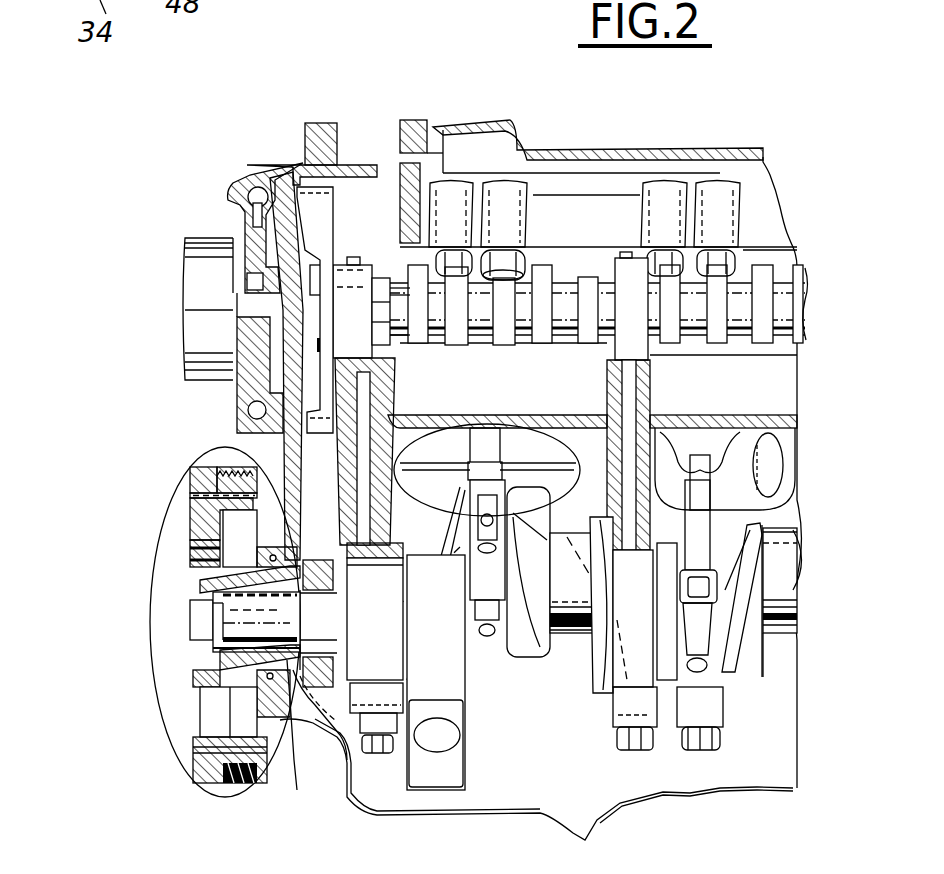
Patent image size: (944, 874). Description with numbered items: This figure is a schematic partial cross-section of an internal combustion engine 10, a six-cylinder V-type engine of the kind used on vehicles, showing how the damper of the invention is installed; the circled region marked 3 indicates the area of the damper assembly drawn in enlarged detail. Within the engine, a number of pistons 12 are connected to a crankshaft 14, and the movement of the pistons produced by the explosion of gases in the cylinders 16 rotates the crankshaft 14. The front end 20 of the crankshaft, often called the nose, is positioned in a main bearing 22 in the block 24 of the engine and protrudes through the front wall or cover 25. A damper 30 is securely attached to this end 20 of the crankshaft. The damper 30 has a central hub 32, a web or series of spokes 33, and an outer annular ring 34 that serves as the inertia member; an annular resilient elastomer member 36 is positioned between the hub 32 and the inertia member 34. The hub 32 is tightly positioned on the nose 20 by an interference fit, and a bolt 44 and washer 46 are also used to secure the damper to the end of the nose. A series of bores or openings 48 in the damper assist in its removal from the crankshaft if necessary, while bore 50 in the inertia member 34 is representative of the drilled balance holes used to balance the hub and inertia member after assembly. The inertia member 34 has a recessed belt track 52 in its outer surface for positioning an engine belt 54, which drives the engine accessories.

The internal combustion engine 10 is at (130, 397).
The detail region of FIG. 3 is at (140, 560).
The pistons 12 is at (522, 440).
The crankshaft 14 is at (460, 677).
The cylinders 16 is at (428, 440).
The end of the crankshaft (nose) 20 is at (292, 680).
The main bearing 22 is at (388, 547).
The block 24 is at (360, 503).
The front wall or cover 25 is at (293, 483).
The damper 30 is at (188, 692).
The central hub 32 is at (197, 563).
The web or series of spokes 33 is at (195, 530).
The outer annular ring (inertia member) 34 is at (225, 478).
The annular resilient elastomer member 36 is at (195, 492).
The bolt 44 is at (205, 650).
The washer 46 is at (197, 677).
The bores or openings 48 is at (197, 565).
The bore (balance hole) 50 is at (200, 770).
The recessed belt track 52 is at (238, 465).
The engine belt 54 is at (240, 785).